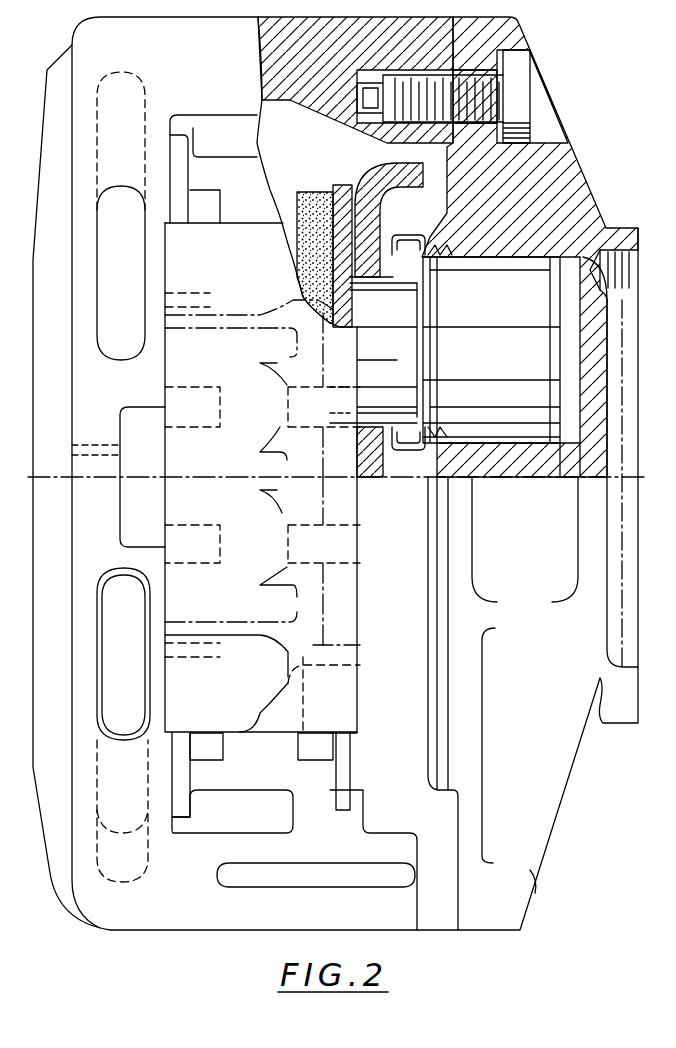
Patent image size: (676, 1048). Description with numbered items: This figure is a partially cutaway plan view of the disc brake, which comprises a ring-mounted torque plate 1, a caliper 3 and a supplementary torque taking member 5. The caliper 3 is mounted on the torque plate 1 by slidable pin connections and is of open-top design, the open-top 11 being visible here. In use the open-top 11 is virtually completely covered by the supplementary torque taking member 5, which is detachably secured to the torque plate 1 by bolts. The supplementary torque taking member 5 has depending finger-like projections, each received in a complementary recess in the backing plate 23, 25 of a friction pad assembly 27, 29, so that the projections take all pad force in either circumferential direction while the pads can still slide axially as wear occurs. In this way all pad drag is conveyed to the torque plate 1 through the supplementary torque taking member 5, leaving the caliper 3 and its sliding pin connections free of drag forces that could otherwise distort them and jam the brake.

The torque plate 1 is at (373, 187).
The caliper 3 is at (545, 760).
The supplementary torque taking member 5 is at (185, 468).
The open-top 11 is at (247, 167).
The backing plate 23 is at (177, 772).
The backing plate 25 is at (345, 780).
The friction pad assembly 27 is at (213, 743).
The friction pad assembly 29 is at (315, 200).